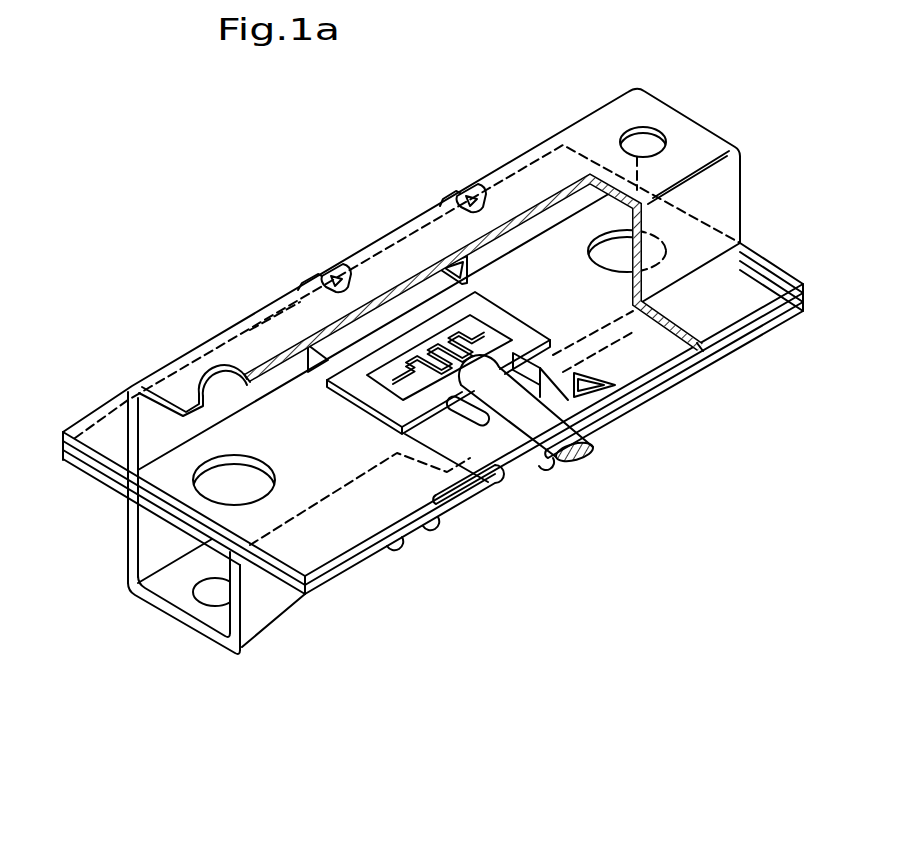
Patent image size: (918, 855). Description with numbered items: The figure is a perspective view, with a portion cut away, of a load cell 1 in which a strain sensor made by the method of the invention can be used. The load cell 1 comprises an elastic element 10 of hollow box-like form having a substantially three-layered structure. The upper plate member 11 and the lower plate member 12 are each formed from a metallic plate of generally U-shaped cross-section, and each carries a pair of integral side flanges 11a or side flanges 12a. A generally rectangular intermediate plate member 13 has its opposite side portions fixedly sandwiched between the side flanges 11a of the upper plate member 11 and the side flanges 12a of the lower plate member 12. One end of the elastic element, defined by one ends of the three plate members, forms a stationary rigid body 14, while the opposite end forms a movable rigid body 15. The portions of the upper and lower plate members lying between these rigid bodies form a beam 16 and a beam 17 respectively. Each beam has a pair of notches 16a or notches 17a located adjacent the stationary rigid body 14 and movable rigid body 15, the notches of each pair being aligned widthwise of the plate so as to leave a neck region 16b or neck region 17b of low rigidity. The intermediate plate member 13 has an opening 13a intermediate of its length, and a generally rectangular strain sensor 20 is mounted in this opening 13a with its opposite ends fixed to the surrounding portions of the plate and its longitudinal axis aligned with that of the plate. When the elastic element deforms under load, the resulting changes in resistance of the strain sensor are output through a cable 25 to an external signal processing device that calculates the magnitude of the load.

The load cell 1 is at (706, 100).
The elastic element 10 is at (557, 133).
The upper plate member 11 is at (122, 400).
The side flanges 11a is at (100, 450).
The lower plate member 12 is at (170, 613).
The side flanges 12a is at (100, 472).
The intermediate plate member 13 is at (212, 539).
The opening 13a is at (541, 380).
The stationary rigid body 14 is at (278, 623).
The movable rigid body 15 is at (693, 380).
The beam 16 is at (397, 226).
The notches 16a is at (447, 190).
The neck region 16b is at (490, 215).
The beam 17 is at (490, 500).
The notches 17a is at (412, 550).
The neck region 17b is at (373, 512).
The strain sensor 20 is at (520, 310).
The cable 25 is at (595, 458).